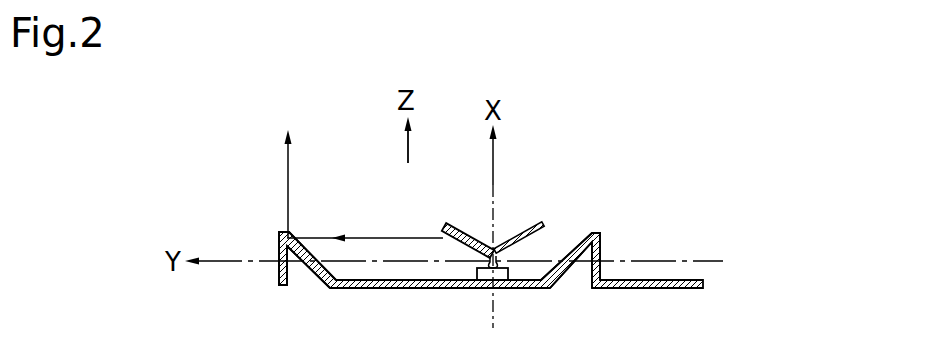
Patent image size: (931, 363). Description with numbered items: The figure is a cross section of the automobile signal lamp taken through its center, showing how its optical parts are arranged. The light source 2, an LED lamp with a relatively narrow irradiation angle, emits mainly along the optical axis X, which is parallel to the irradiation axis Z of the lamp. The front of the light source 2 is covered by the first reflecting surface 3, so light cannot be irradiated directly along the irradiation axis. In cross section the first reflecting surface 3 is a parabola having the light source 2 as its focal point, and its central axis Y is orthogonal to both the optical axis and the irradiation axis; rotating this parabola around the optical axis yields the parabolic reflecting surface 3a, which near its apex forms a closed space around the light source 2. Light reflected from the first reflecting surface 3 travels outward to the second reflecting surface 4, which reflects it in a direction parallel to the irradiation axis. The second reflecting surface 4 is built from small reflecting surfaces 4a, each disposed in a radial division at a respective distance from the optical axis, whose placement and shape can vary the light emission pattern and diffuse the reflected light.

The light source 2 is at (505, 288).
The first reflecting surface 3 is at (468, 222).
The parabolic reflecting surface 3a is at (527, 222).
The second reflecting surface 4 is at (374, 213).
The small reflecting surface 4a is at (298, 257).